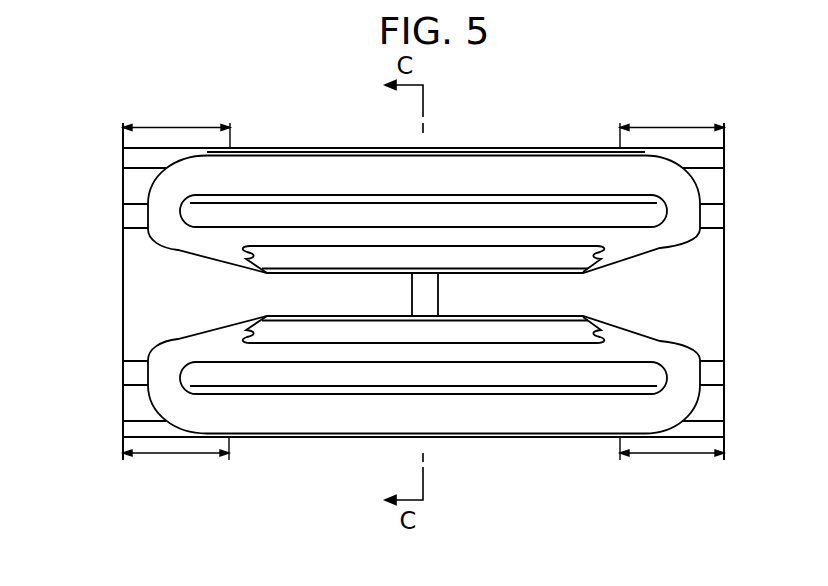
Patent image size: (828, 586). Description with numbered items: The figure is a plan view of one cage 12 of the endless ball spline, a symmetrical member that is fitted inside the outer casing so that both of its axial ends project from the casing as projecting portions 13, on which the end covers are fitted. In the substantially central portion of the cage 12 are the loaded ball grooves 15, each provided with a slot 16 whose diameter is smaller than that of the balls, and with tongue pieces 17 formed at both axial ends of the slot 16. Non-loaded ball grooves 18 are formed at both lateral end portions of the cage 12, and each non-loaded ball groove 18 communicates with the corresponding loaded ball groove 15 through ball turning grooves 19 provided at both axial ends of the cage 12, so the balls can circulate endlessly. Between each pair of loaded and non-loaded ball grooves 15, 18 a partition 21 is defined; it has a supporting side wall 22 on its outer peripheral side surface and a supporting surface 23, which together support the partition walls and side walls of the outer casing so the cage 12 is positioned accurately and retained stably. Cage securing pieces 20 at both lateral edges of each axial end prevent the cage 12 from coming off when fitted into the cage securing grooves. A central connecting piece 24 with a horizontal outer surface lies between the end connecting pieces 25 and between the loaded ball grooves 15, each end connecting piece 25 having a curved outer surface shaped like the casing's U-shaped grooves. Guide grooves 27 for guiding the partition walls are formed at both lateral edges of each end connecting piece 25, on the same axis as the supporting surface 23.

The cage 12 is at (306, 446).
The projecting portion 13 is at (180, 127).
The loaded ball groove 15 is at (333, 237).
The slot 16 is at (477, 252).
The tongue piece 17 is at (249, 246).
The non-loaded ball groove 18 is at (387, 170).
The ball turning groove 19 is at (167, 220).
The cage securing piece 20 is at (132, 154).
The partition 21 is at (425, 210).
The supporting side wall 22 is at (262, 197).
The supporting surface 23 is at (295, 213).
The central connecting piece 24 is at (485, 305).
The end connecting piece 25 is at (182, 293).
The guide groove 27 is at (127, 210).